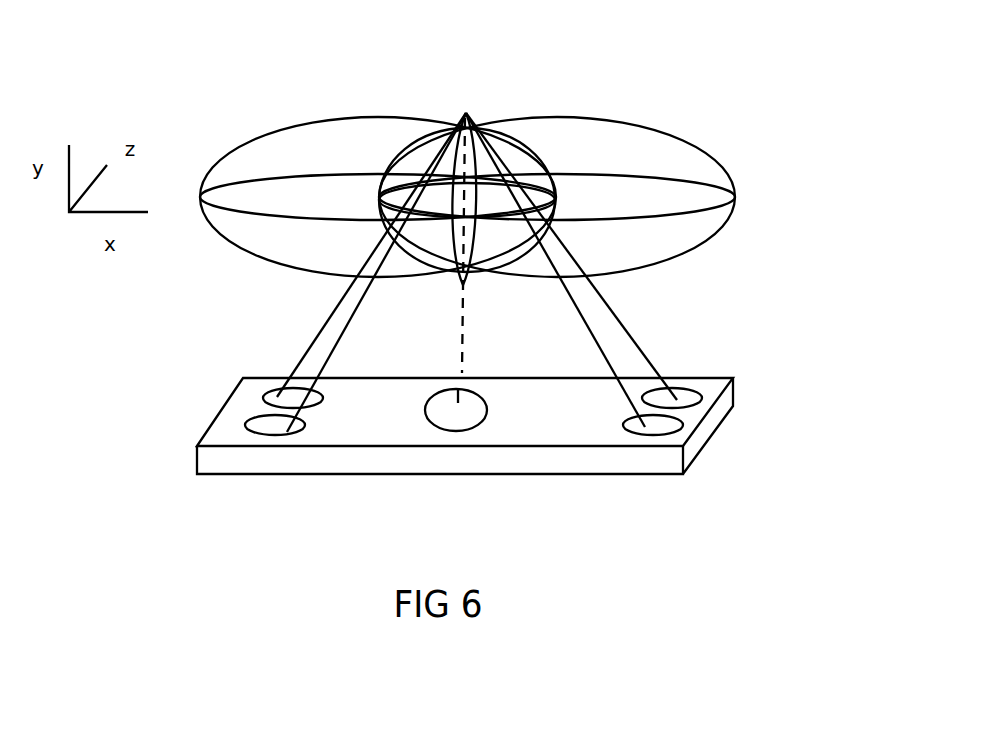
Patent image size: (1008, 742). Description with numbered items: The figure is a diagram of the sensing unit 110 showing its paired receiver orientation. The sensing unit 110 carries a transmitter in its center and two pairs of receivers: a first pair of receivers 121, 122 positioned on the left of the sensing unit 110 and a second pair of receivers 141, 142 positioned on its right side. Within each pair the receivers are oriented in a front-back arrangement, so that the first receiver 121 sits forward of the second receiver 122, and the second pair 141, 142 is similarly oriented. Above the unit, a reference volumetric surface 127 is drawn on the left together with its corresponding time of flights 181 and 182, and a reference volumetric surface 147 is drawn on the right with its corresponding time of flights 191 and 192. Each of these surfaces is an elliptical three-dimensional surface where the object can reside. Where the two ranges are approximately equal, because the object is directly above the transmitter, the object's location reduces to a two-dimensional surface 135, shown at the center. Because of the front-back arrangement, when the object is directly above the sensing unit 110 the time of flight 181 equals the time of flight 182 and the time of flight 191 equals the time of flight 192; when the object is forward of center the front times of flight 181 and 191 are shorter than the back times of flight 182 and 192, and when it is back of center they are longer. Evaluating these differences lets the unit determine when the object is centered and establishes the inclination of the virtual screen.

The sensing unit 110 is at (250, 472).
The first receiver 121 is at (260, 418).
The second receiver 122 is at (277, 392).
The receiver of second pair 141 is at (687, 422).
The receiver of second pair 142 is at (702, 396).
The reference volumetric surface 127 is at (260, 138).
The reference volumetric surface 147 is at (710, 157).
The two-dimensional surface 135 is at (483, 155).
The time of flight 181 is at (347, 330).
The time of flight 182 is at (323, 330).
The time of flight 191 is at (583, 315).
The time of flight 192 is at (626, 322).